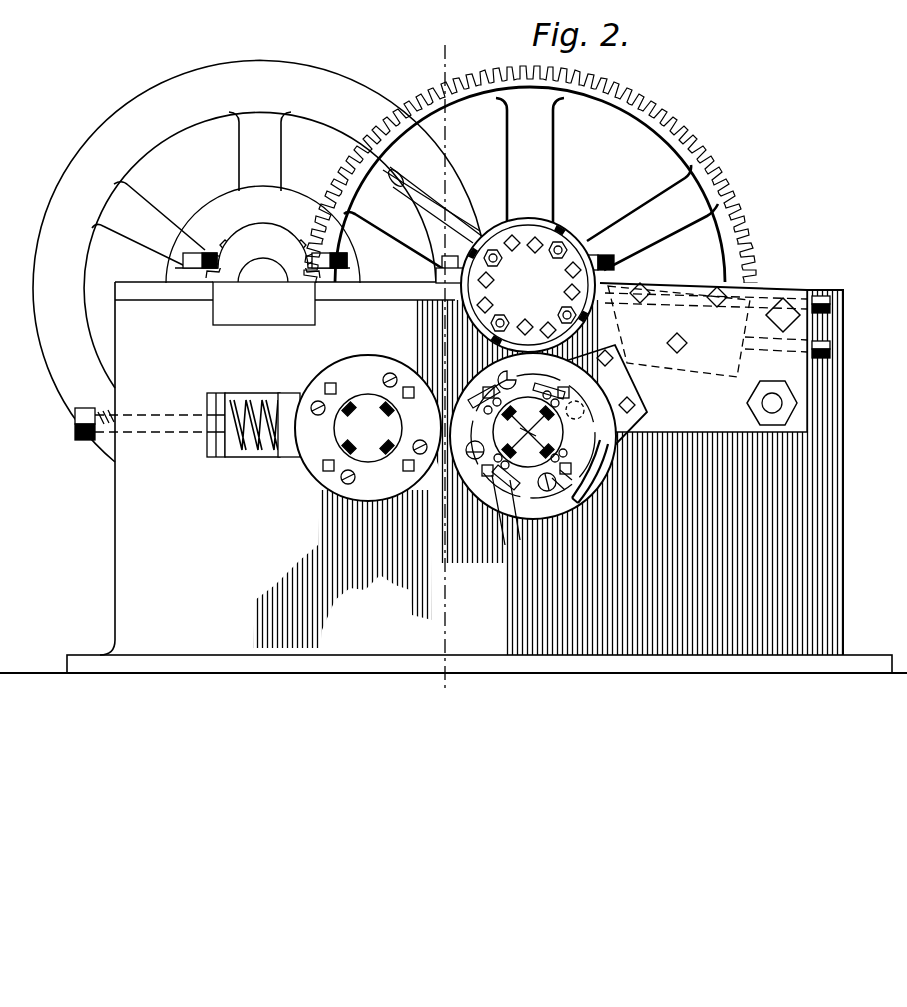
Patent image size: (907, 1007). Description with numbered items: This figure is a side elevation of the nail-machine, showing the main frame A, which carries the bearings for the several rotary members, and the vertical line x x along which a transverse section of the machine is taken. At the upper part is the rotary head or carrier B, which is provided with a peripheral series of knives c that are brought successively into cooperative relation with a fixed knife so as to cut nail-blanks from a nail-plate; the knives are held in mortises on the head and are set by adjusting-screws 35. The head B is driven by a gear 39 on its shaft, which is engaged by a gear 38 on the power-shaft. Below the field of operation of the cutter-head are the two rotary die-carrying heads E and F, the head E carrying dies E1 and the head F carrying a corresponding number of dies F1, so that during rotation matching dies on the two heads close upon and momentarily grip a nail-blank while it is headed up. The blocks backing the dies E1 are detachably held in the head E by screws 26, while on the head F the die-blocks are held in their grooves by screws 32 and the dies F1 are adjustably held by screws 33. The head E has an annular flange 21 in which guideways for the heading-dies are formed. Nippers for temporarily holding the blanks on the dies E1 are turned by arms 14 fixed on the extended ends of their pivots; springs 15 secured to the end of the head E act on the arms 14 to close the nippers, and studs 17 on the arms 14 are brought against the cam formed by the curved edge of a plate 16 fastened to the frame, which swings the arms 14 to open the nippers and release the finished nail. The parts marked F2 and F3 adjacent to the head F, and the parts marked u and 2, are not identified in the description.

The gear 39 is at (484, 73).
The gear 38 is at (276, 236).
The knives c is at (478, 246).
The adjusting-screws 35 is at (553, 252).
The rotary head B is at (528, 285).
The rod u is at (688, 286).
The plate 16 is at (598, 396).
The rotary die-carrying head F is at (368, 428).
The dies F1 is at (287, 451).
The spring F² F2 is at (243, 452).
The abutment block F³ F3 is at (219, 443).
The screws 32 is at (404, 392).
The screws 33 is at (368, 428).
The shaft 2 is at (322, 490).
The rotary die-carrying head E is at (445, 350).
The dies E1 is at (404, 506).
The studs 17 is at (522, 500).
The screws 26 is at (516, 423).
The springs 15 is at (540, 380).
The arms 14 is at (478, 520).
The annular flange 21 is at (575, 503).
The main frame A is at (453, 464).
The section line x is at (443, 368).